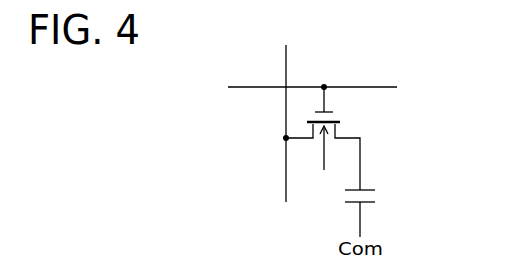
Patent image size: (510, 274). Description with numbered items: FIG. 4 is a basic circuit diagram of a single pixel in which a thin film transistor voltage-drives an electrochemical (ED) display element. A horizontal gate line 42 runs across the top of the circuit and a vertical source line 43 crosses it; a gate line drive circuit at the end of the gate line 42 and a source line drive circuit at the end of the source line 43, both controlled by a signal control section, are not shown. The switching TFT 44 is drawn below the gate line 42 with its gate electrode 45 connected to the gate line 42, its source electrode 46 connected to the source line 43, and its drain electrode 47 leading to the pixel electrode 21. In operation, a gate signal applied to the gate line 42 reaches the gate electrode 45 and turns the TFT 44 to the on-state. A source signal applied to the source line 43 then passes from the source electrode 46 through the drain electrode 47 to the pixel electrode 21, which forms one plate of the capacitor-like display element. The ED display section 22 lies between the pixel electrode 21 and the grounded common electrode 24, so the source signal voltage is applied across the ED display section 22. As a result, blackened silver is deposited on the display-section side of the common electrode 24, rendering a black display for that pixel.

The pixel electrode 21 is at (366, 189).
The ED display section 22 is at (377, 196).
The Com electrode 24 is at (366, 203).
The gate line 42 is at (299, 88).
The source line 43 is at (285, 111).
The TFT 44 is at (323, 149).
The gate electrode 45 is at (334, 112).
The source electrode 46 is at (312, 129).
The drain electrode 47 is at (338, 127).